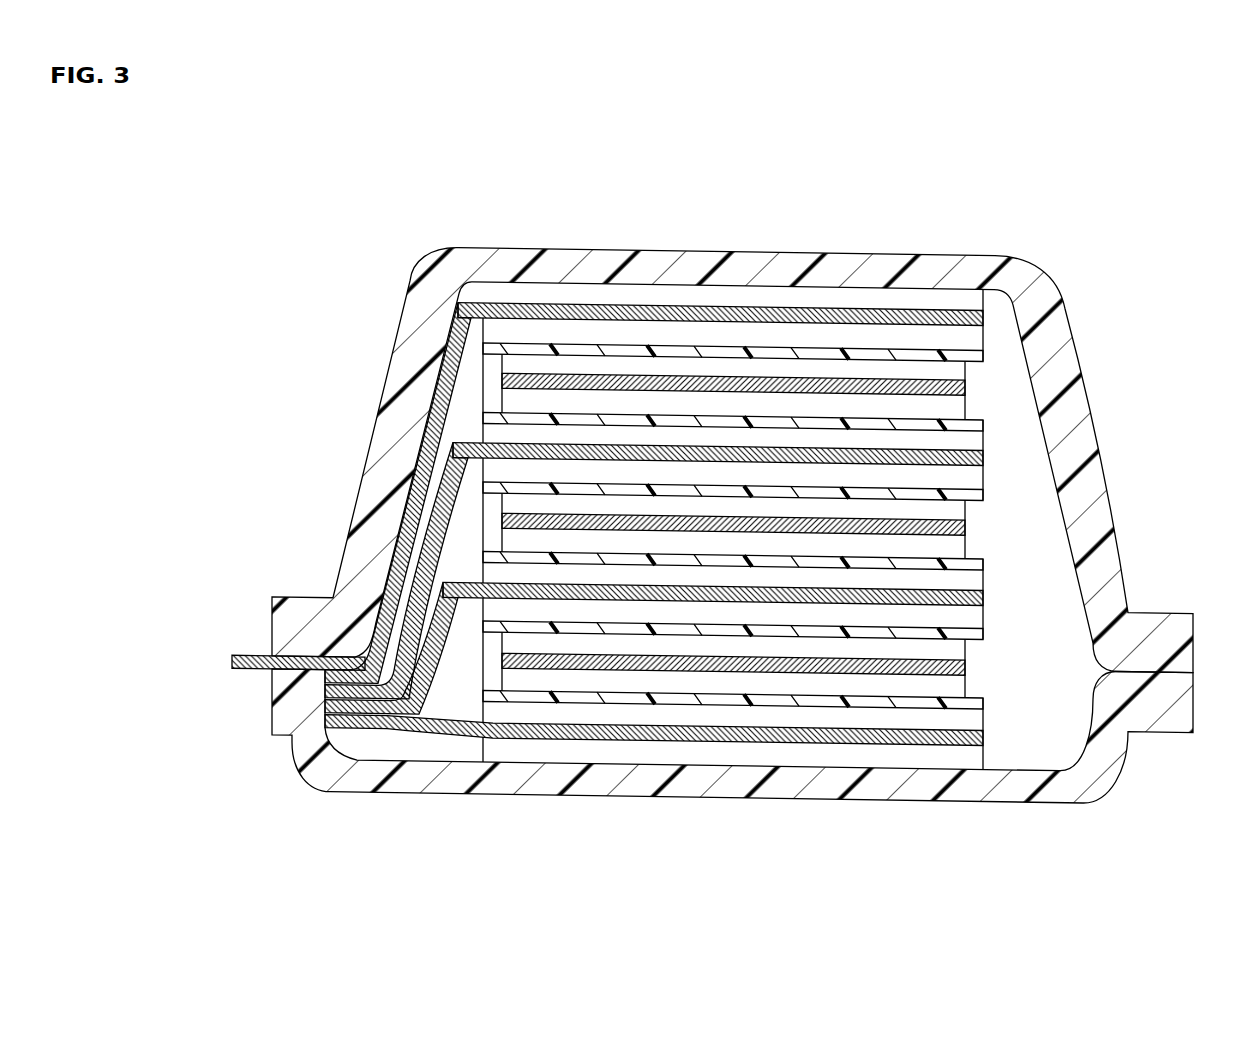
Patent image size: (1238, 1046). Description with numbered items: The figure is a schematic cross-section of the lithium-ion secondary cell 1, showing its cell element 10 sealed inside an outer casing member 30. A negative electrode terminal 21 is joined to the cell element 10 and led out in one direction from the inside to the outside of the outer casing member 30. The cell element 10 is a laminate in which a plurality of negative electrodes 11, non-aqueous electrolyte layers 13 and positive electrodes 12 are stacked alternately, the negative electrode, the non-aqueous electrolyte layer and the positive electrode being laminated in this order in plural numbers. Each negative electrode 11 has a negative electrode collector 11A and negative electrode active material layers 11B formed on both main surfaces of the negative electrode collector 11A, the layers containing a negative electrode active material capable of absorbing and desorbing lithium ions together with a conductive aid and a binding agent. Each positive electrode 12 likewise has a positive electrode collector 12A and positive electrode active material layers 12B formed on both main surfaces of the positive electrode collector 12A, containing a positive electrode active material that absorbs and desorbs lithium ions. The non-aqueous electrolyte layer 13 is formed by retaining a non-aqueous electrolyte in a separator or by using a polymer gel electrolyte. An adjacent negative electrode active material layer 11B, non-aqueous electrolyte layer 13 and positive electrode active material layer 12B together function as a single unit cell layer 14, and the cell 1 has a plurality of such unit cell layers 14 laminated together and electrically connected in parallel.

The lithium-ion secondary cell 1 is at (1069, 252).
The cell element 10 is at (682, 525).
The negative electrode 11 is at (733, 352).
The negative electrode collector 11A is at (723, 352).
The negative electrode active material layer 11B is at (733, 352).
The positive electrode 12 is at (733, 454).
The positive electrode collector 12A is at (733, 384).
The positive electrode active material layer 12B is at (733, 524).
The non-aqueous electrolyte layer 13 is at (733, 526).
The unit cell layer 14 is at (733, 526).
The negative electrode terminal 21 is at (236, 657).
The outer casing member 30 is at (1085, 382).